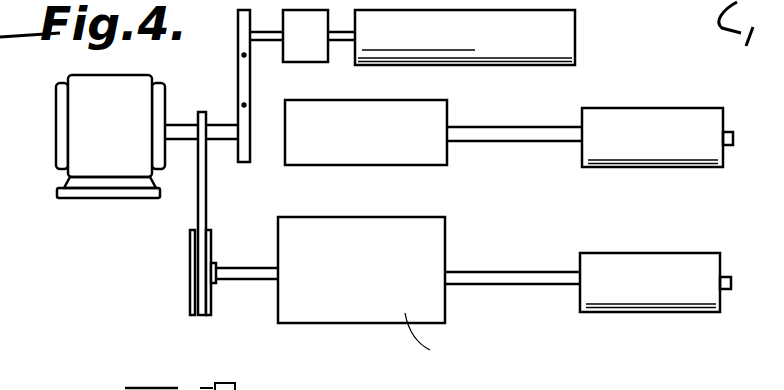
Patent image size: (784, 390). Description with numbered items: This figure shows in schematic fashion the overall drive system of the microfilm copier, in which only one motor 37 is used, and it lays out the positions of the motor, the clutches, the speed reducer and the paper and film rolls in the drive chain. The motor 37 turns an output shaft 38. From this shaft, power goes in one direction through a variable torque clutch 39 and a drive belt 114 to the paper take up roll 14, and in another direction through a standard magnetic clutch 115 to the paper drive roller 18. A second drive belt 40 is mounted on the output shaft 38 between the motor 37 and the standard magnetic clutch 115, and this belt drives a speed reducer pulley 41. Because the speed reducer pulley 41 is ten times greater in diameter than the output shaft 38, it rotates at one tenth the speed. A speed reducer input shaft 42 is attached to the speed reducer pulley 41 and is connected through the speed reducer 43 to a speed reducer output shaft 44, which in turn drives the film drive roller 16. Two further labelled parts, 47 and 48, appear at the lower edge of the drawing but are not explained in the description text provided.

The paper take up roll 14 is at (567, 38).
The film drive roller 16 is at (715, 297).
The paper drive roller 18 is at (592, 152).
The motor 37 is at (118, 143).
The output shaft 38 is at (178, 122).
The variable torque clutch 39 is at (320, 50).
The drive belt 40 is at (207, 196).
The speed reducer pulley 41 is at (189, 305).
The speed reducer input shaft 42 is at (250, 283).
The speed reducer 43 is at (396, 303).
The speed reducer output shaft 44 is at (531, 262).
The switch 47 is at (155, 388).
The cam 48 is at (168, 387).
The drive belt 114 is at (252, 72).
The standard magnetic clutch 115 is at (447, 117).